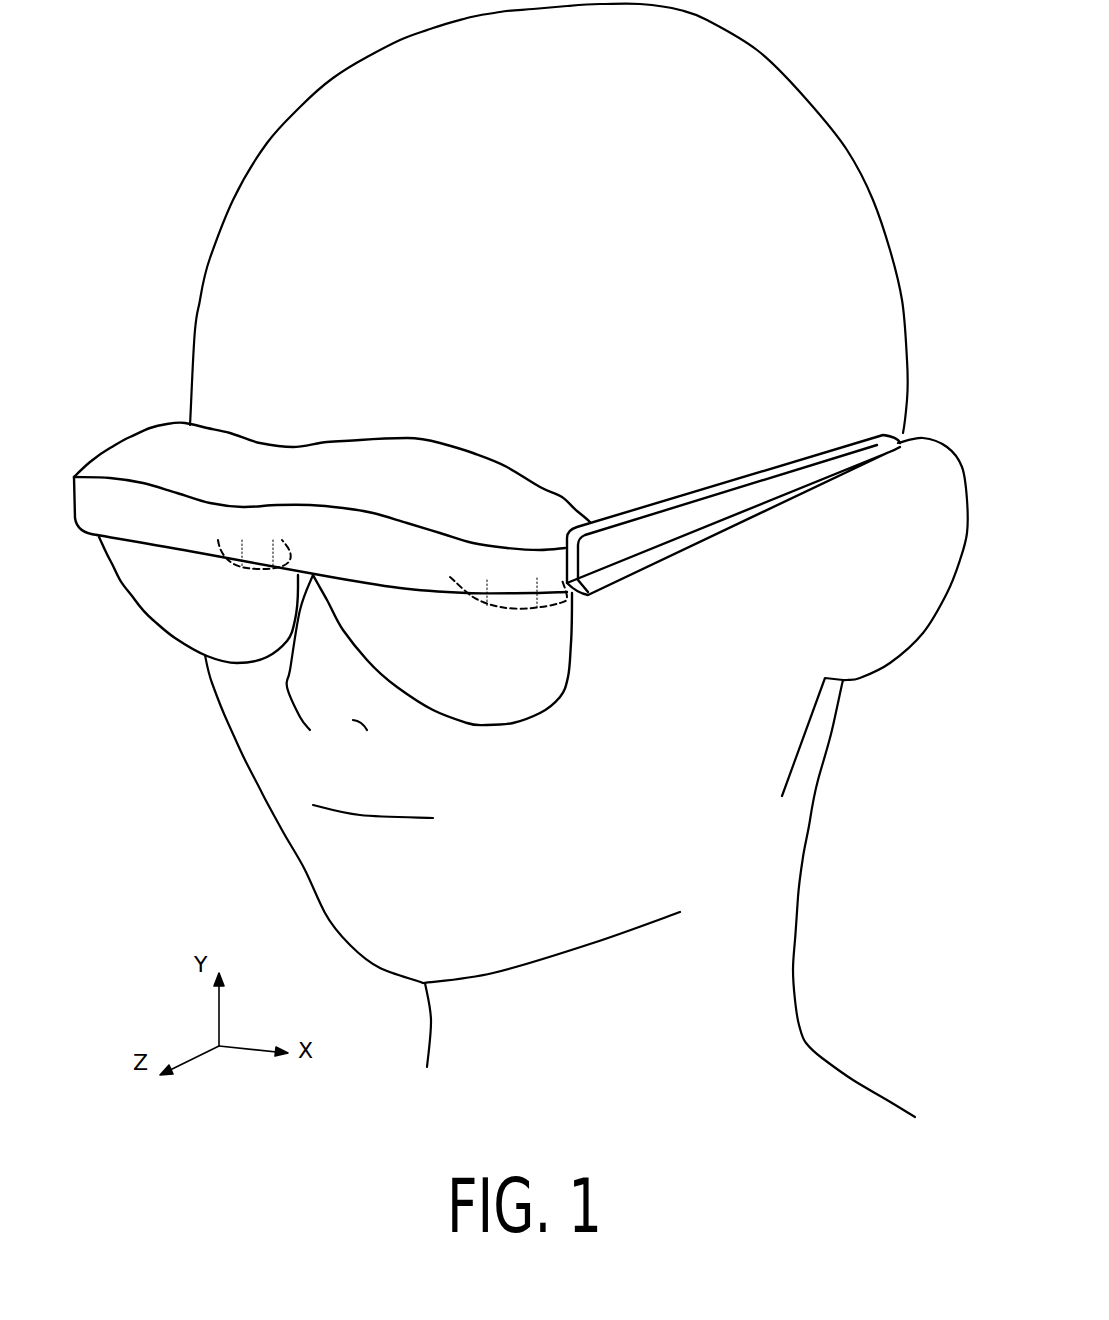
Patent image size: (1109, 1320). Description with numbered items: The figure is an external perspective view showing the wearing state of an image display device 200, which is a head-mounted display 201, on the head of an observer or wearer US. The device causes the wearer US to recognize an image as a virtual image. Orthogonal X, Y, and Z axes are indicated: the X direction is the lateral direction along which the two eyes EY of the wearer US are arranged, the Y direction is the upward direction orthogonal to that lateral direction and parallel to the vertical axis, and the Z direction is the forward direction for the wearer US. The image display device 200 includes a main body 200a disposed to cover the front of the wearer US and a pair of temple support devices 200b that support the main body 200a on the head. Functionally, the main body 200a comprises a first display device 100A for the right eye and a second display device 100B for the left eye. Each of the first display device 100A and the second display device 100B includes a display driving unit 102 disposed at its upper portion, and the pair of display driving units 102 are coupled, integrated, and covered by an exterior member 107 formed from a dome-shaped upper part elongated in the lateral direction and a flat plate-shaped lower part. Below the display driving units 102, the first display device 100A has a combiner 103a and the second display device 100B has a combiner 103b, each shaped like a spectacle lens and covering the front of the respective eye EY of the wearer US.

The wearer US is at (887, 218).
The image display device 200 is at (484, 517).
The head-mounted display 201 is at (340, 498).
The first display device 100A is at (213, 535).
The second display device 100B is at (445, 567).
The display driving unit 102 is at (190, 452).
The main body 200a is at (300, 455).
The temple support devices 200b is at (765, 483).
The exterior member 107 is at (177, 533).
The combiner 103a is at (227, 647).
The combiner 103b is at (510, 707).
The eyes EY is at (242, 570).